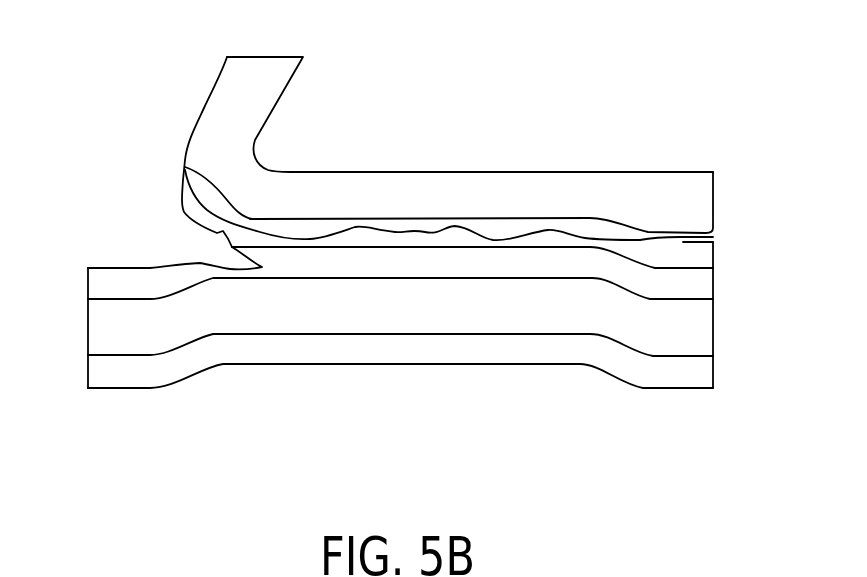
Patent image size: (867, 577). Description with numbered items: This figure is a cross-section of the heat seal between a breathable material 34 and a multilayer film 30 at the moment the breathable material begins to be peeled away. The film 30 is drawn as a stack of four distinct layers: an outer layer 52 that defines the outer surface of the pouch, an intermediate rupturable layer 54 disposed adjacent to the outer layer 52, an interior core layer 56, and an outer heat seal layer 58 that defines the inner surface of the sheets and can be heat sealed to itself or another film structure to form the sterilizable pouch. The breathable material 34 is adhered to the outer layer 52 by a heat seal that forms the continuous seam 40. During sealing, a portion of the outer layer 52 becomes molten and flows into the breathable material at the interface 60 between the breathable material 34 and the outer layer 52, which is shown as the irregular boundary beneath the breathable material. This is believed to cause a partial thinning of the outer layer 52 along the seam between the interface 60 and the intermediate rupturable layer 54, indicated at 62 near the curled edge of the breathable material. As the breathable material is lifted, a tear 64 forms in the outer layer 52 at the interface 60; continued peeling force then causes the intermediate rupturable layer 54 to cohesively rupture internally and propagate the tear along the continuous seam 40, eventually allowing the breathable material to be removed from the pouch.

The film 30 is at (730, 242).
The breathable material 34 is at (700, 211).
The continuous seam 40 is at (516, 153).
The outer layer 52 is at (707, 265).
The intermediate rupturable layer 54 is at (707, 297).
The interior core layer 56 is at (707, 347).
The outer heat seal layer 58 is at (707, 385).
The interface 60 is at (350, 225).
The partial thinning of the outer layer 62 is at (164, 186).
The tear 64 is at (198, 249).